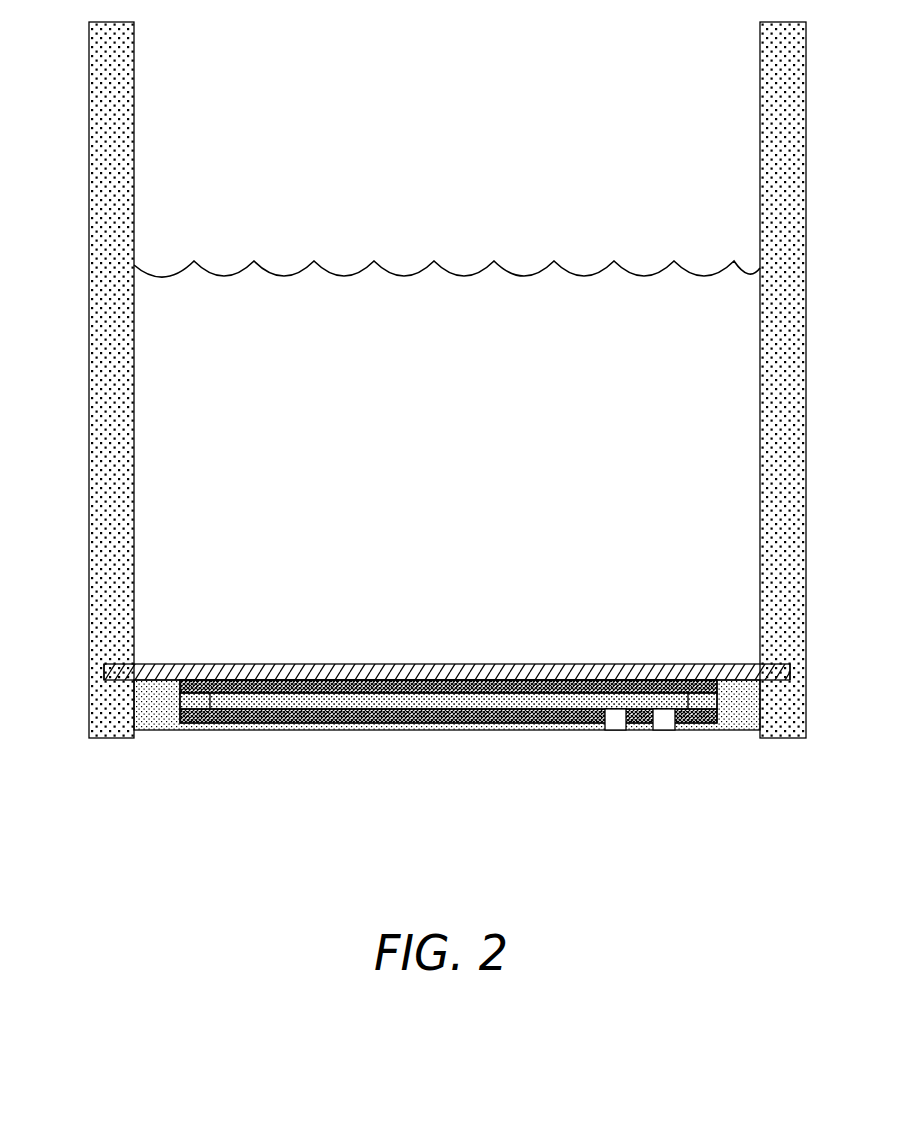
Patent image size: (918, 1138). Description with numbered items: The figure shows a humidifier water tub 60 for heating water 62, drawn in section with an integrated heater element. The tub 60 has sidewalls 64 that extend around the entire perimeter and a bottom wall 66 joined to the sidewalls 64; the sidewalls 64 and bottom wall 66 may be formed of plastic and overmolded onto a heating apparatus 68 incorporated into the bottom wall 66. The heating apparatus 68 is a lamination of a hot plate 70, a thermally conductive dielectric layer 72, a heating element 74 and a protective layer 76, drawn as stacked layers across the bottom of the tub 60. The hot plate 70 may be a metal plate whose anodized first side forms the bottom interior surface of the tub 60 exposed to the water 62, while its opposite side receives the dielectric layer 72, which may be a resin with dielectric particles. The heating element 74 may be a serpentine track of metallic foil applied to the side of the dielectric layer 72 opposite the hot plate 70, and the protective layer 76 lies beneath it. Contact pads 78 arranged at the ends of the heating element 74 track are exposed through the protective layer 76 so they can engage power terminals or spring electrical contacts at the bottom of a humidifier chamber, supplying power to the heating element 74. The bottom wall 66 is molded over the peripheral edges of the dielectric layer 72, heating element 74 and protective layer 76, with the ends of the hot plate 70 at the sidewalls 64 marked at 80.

The water tub 60 is at (537, 112).
The water 62 is at (631, 344).
The sidewalls 64 is at (118, 217).
The bottom wall 66 is at (157, 708).
The heating apparatus 68 is at (431, 722).
The hot plate 70 is at (324, 672).
The thermally conductive dielectric layer 72 is at (404, 685).
The heating element 74 is at (485, 702).
The protective layer 76 is at (552, 717).
The contact pads 78 is at (607, 730).
The seal 80 is at (104, 668).